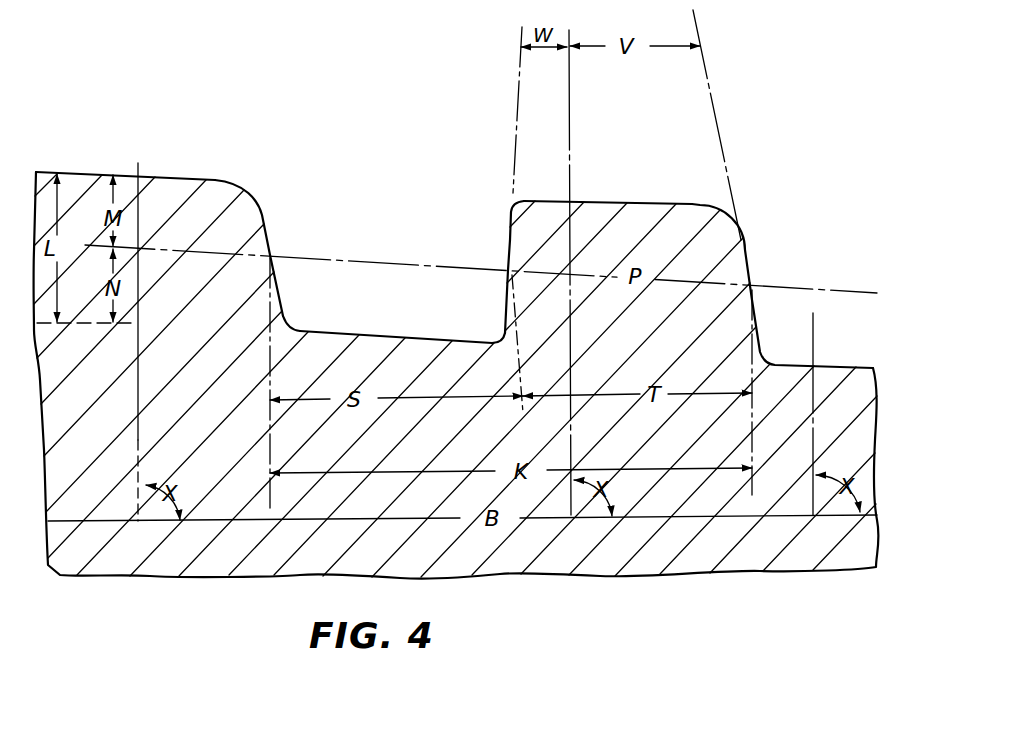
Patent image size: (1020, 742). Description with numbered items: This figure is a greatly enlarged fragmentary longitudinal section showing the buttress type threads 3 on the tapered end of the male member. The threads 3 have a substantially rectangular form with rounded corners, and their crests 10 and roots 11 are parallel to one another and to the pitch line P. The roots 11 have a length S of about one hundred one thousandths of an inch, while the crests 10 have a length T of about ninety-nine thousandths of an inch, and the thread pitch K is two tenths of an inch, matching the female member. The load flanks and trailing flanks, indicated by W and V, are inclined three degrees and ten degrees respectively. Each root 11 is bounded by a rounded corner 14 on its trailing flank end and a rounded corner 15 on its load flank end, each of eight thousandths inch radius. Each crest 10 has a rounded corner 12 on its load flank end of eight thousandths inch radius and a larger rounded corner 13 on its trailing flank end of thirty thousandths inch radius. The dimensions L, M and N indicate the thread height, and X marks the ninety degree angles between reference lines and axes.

The buttress type threads 3 is at (220, 202).
The crests 10 is at (168, 207).
The roots 11 is at (387, 350).
The rounded corner 12 is at (524, 211).
The rounded corner 13 is at (725, 223).
The rounded corner 14 is at (297, 328).
The rounded corner 15 is at (497, 340).